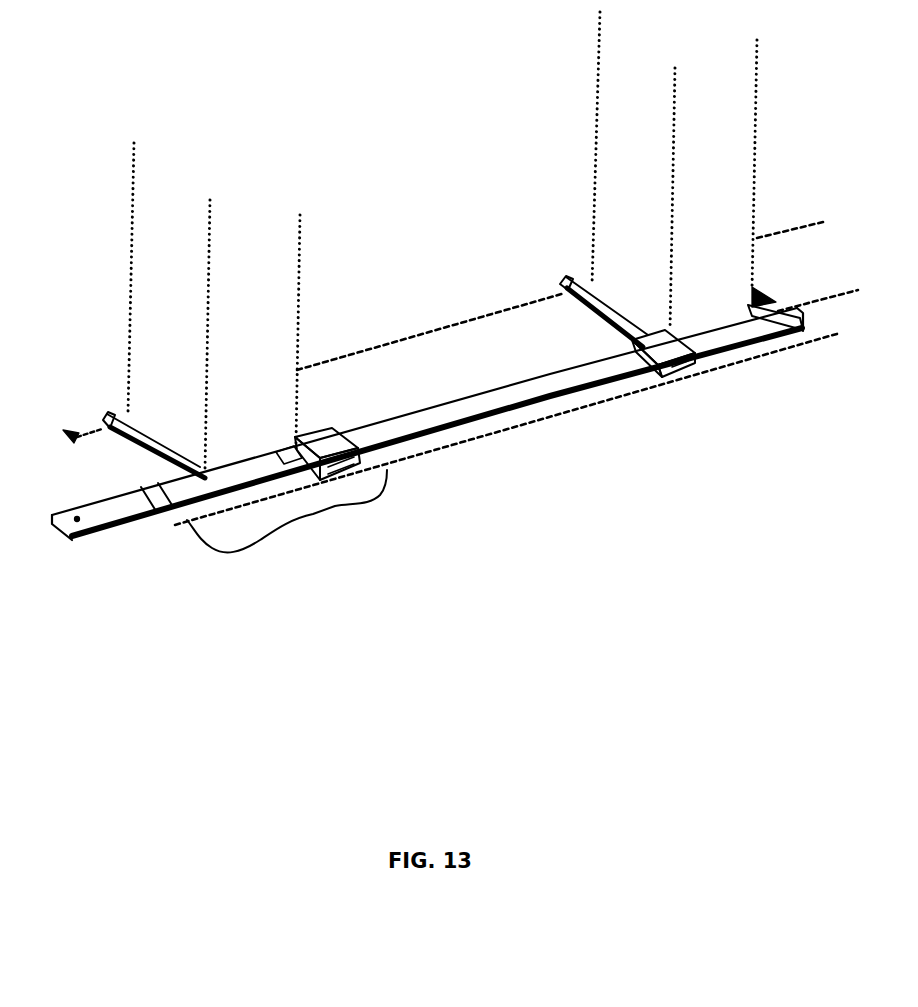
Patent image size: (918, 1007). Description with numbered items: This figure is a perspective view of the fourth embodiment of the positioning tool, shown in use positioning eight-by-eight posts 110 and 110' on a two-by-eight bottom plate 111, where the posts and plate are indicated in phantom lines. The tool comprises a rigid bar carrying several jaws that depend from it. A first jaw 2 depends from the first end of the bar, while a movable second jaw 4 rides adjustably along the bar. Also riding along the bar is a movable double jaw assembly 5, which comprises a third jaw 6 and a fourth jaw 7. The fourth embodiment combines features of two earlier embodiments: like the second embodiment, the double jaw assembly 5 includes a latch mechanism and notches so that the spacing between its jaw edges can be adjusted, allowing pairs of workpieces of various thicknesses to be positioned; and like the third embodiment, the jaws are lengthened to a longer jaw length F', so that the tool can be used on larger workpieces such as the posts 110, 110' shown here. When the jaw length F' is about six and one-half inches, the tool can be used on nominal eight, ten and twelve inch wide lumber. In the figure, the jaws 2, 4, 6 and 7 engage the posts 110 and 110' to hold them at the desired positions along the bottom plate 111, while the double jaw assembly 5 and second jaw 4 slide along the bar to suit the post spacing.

The first jaw 2 is at (768, 326).
The movable second jaw 4 is at (629, 325).
The double jaw assembly 5 is at (313, 514).
The third jaw 6 is at (300, 437).
The fourth jaw 7 is at (105, 412).
The post 110 is at (173, 306).
The post 110' is at (611, 171).
The bottom plate 111 is at (448, 380).
The jaw length F' is at (104, 460).